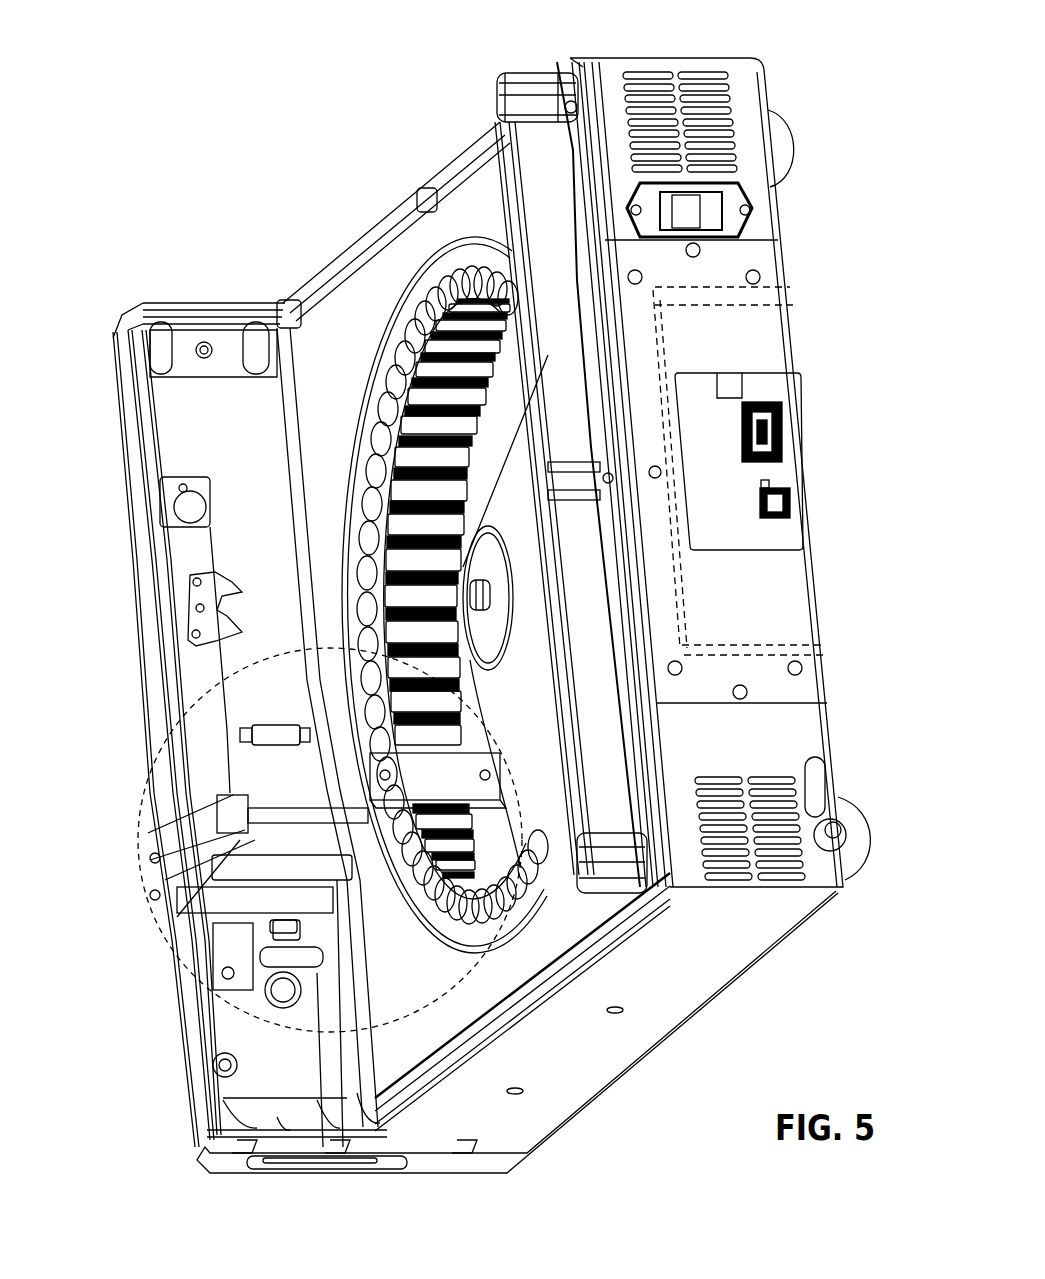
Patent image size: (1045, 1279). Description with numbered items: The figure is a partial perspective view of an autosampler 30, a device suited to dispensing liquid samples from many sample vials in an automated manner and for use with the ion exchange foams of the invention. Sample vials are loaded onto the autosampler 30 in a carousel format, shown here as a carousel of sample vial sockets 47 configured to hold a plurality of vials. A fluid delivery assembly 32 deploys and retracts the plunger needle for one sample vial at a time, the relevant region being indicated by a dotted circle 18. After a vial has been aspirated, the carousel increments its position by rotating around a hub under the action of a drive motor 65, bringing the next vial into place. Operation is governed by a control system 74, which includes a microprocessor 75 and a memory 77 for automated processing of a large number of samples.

The autosampler 30 is at (206, 211).
The carousel of sample vial sockets 47 is at (415, 303).
The memory 77 is at (767, 288).
The microprocessor 75 is at (767, 351).
The drive motor 65 is at (485, 556).
The control system 74 is at (793, 604).
The fluid delivery assembly 32 is at (136, 842).
The cartridge receiving area 18 is at (140, 896).